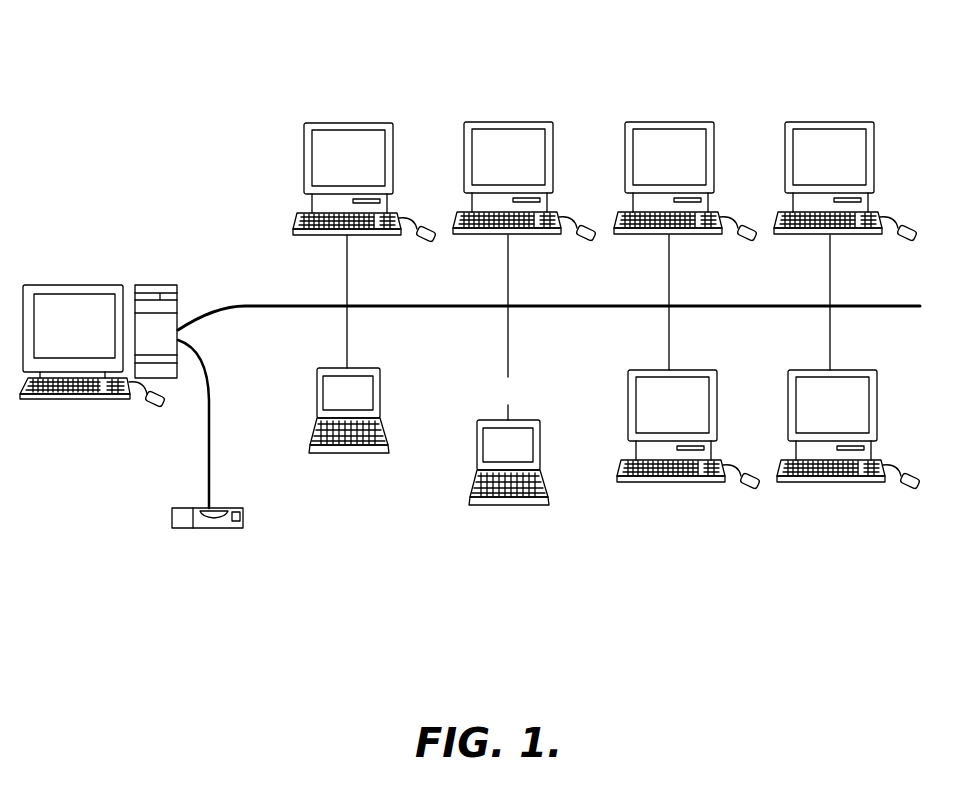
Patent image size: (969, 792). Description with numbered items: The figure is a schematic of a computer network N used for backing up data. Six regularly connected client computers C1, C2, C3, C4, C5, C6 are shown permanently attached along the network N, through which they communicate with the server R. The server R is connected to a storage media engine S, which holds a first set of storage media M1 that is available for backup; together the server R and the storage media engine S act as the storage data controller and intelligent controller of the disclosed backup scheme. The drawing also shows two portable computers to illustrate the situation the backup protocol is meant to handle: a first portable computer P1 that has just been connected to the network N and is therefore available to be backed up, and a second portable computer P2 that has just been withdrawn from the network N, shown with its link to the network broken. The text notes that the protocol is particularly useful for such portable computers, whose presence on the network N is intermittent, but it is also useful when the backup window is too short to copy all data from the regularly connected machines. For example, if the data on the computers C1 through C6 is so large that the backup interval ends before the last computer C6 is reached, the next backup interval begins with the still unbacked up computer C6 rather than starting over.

The network N is at (280, 305).
The server R is at (78, 404).
The regularly connected computer C1 is at (370, 110).
The regularly connected computer C2 is at (515, 109).
The regularly connected computer C3 is at (663, 111).
The regularly connected computer C4 is at (803, 111).
The regularly connected computer C5 is at (828, 484).
The regularly connected computer C6 is at (668, 484).
The first portable computer P1 is at (363, 458).
The second portable computer P2 is at (527, 513).
The storage media engine S is at (211, 538).
The first set of storage media M1 is at (234, 529).